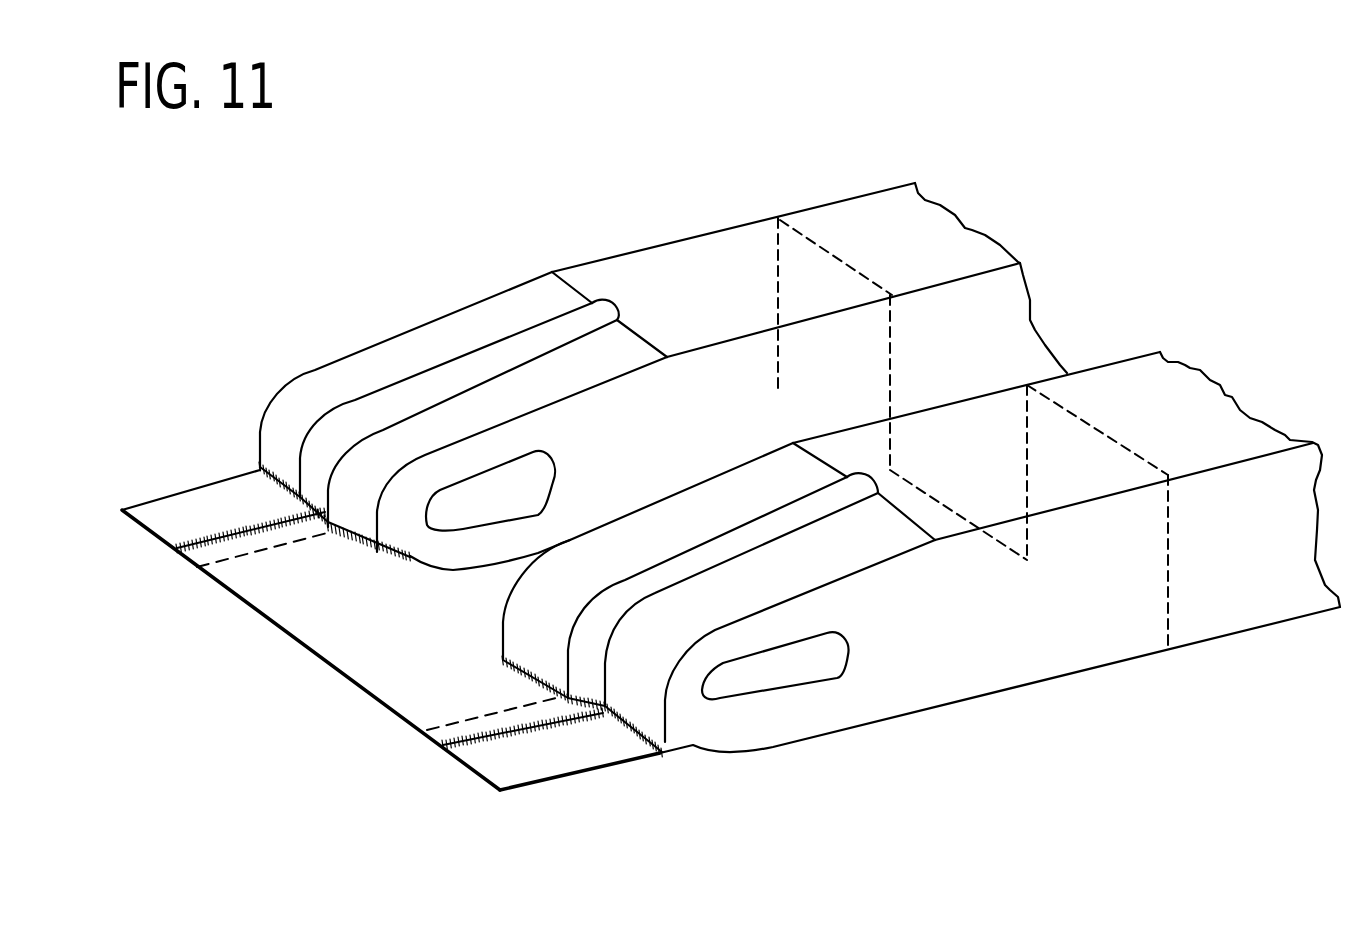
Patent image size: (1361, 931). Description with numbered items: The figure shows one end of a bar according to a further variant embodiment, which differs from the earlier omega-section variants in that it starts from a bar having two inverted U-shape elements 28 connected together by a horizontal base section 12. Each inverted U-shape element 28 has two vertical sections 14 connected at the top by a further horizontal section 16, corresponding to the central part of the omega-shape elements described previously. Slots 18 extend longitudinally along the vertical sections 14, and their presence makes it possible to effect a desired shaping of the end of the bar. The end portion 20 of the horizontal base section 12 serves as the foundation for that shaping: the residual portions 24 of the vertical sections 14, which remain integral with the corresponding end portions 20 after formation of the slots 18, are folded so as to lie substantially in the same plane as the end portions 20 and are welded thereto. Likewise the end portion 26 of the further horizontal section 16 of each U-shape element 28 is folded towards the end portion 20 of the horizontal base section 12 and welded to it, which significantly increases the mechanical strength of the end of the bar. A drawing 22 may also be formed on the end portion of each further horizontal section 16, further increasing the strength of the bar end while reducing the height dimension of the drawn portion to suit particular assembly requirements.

The horizontal base section 12 is at (942, 505).
The vertical section 14 is at (775, 257).
The further horizontal section 16 is at (833, 243).
The slot 18 is at (552, 473).
The end portion of the horizontal base section 20 is at (306, 604).
The drawing 22 is at (543, 342).
The residual portion 24 is at (200, 557).
The end portion of the further horizontal section 26 is at (258, 433).
The inverted U-shape element 28 is at (975, 229).